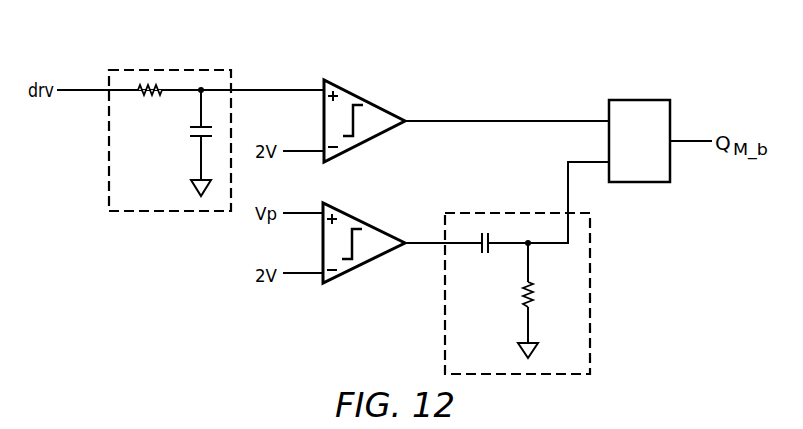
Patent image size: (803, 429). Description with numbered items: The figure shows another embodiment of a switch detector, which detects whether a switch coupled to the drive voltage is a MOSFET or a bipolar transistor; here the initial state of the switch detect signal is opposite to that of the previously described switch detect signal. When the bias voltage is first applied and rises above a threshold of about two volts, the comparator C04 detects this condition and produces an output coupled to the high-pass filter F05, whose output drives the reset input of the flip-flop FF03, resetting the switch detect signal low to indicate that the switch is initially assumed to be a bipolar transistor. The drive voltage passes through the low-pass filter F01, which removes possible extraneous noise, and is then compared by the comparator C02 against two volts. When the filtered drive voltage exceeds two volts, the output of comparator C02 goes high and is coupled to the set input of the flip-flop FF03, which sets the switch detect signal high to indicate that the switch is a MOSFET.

The low-pass filter F01 is at (133, 69).
The comparator C02 is at (363, 100).
The flip-flop FF03 is at (639, 100).
The comparator C04 is at (365, 265).
The high-pass filter F05 is at (590, 295).